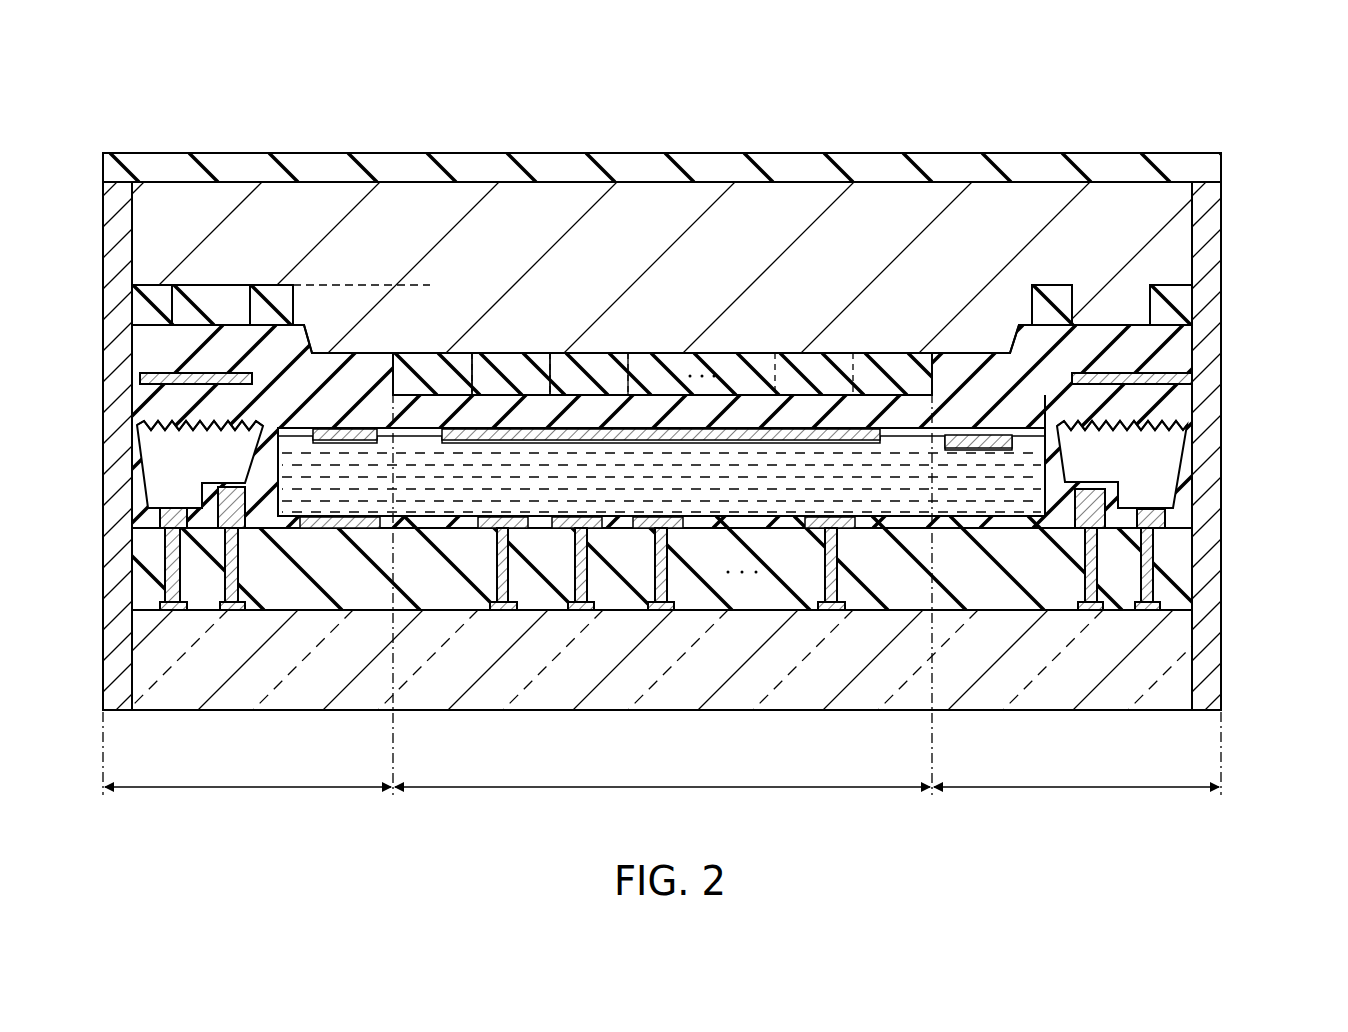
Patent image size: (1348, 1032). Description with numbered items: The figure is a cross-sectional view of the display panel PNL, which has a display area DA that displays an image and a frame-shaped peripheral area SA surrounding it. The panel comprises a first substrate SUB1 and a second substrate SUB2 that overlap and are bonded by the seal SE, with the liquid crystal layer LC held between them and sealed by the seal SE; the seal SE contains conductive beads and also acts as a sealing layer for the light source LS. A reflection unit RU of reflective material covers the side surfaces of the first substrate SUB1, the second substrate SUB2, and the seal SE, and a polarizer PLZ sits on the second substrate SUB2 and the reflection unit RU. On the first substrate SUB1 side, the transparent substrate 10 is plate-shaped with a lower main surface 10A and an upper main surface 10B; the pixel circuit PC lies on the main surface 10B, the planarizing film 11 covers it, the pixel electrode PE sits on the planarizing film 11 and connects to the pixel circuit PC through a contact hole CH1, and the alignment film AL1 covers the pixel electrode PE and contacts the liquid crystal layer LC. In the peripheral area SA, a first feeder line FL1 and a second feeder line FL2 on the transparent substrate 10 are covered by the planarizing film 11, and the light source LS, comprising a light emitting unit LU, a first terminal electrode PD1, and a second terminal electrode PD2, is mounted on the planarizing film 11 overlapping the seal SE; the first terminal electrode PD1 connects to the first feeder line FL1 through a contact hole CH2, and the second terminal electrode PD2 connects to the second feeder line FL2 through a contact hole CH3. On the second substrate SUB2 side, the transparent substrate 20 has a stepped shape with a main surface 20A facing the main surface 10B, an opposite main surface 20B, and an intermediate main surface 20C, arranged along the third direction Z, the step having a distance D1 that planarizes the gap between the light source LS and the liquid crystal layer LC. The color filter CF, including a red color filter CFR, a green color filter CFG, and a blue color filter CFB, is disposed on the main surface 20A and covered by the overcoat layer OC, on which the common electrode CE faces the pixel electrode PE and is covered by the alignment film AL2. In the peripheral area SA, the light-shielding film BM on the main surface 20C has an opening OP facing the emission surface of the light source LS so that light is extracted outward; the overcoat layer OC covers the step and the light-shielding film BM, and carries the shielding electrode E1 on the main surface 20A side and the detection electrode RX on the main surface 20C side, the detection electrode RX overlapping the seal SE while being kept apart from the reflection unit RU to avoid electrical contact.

The display panel PNL is at (1169, 121).
The polarizer PLZ is at (1212, 162).
The second substrate SUB2 is at (1206, 212).
The transparent substrate 20 is at (1172, 240).
The main surface 20A is at (362, 359).
The main surface 20B is at (406, 187).
The main surface 20C is at (222, 295).
The light-shielding film BM is at (1052, 312).
The opening OP is at (1093, 281).
The overcoat layer OC is at (1178, 348).
The detection electrode RX is at (1180, 378).
The reflection unit RU is at (1180, 405).
The light emitting unit LU is at (1160, 470).
The first terminal electrode PD1 is at (1105, 487).
The second terminal electrode PD2 is at (1150, 515).
The light source LS is at (1300, 455).
The seal SE is at (1072, 398).
The distance D1 is at (412, 287).
The color filter CF is at (430, 290).
The red color filter CFR is at (432, 351).
The green color filter CFG is at (511, 351).
The blue color filter CFB is at (597, 351).
The common electrode CE is at (745, 432).
The shielding electrode E1 is at (966, 447).
The alignment film AL2 is at (1030, 441).
The alignment film AL1 is at (997, 520).
The liquid crystal layer LC is at (893, 510).
The pixel electrode PE is at (527, 524).
The pixel circuit PC is at (500, 608).
The contact hole CH1 is at (491, 557).
The contact hole CH2 is at (1080, 556).
The contact hole CH3 is at (1138, 556).
The first feeder line FL1 is at (1090, 610).
The second feeder line FL2 is at (1148, 610).
The planarizing film 11 is at (1180, 565).
The transparent substrate 10 is at (1185, 655).
The main surface 10A is at (797, 713).
The main surface 10B is at (750, 614).
The first substrate SUB1 is at (1206, 680).
The peripheral area SA is at (662, 803).
The display area DA is at (662, 803).
The third direction Z is at (63, 830).